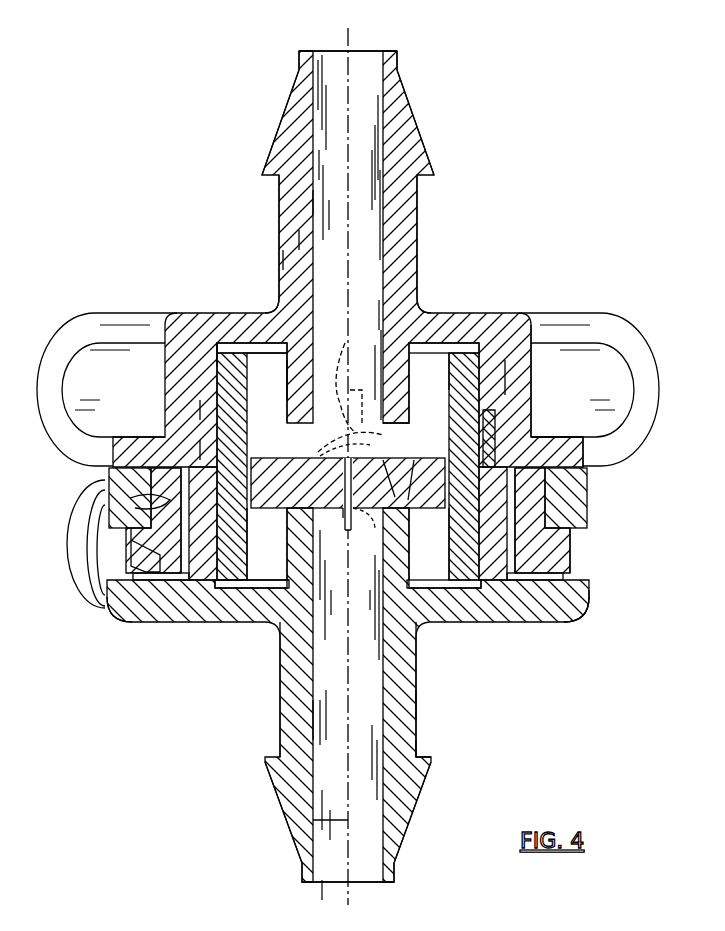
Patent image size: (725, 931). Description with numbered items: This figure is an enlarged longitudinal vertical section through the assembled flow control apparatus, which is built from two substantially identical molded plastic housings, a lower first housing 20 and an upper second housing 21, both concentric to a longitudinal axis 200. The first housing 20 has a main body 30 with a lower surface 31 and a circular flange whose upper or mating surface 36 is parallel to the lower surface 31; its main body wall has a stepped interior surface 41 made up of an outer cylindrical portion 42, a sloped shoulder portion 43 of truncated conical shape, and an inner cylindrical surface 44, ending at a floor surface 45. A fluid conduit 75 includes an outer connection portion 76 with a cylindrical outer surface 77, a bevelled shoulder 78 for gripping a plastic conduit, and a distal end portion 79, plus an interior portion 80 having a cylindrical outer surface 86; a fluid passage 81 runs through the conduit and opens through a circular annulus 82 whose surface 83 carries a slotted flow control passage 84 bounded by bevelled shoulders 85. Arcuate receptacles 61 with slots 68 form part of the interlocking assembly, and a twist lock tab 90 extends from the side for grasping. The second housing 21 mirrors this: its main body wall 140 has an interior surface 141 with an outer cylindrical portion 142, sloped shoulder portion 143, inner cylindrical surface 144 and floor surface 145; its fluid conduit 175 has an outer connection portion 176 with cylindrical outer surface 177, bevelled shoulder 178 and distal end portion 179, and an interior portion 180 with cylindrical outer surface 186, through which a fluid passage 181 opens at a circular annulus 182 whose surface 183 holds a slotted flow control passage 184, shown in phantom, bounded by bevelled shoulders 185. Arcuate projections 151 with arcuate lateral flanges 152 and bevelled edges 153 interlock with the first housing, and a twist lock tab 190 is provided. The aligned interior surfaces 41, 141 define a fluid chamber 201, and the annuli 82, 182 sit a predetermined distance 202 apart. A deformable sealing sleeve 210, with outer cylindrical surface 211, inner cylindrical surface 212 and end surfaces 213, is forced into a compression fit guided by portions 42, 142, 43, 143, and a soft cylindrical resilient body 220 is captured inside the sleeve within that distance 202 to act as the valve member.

The first housing 20 is at (228, 618).
The second housing 21 is at (447, 262).
The main body 30 is at (138, 624).
The lower surface 31 is at (492, 624).
The upper or mating surface 36 is at (523, 427).
The interior surface 41 is at (245, 516).
The outer cylindrical portion 42 is at (108, 479).
The sloped shoulder portion 43 is at (133, 560).
The inner cylindrical surface 44 is at (243, 563).
The floor surface 45 is at (452, 585).
The arcuate receptacles 61 is at (132, 500).
The slot 68 is at (112, 572).
The fluid conduit 75 is at (278, 690).
The outer connection portion 76 is at (420, 745).
The cylindrical outer surface 77 is at (420, 705).
The bevelled shoulder 78 is at (428, 782).
The distal end portion 79 is at (300, 870).
The interior portion 80 is at (411, 546).
The fluid passage 81 is at (330, 722).
The circular annulus 82 is at (414, 460).
The surface 83 is at (385, 460).
The slotted flow control passage 84 is at (344, 520).
The bevelled shoulders 85 is at (372, 525).
The cylindrical outer surface 86 is at (287, 527).
The twist lock tab 90 is at (90, 603).
The main body wall 140 is at (518, 385).
The interior surface 141 is at (470, 343).
The outer cylindrical portion 142 is at (513, 405).
The sloped shoulder portion 143 is at (513, 377).
The inner cylindrical surface 144 is at (456, 372).
The floor surface 145 is at (447, 322).
The arcuate projections 151 is at (110, 538).
The arcuate lateral flange 152 is at (560, 551).
The bevelled edge 153 is at (582, 594).
The fluid conduit 175 is at (298, 238).
The outer connection portion 176 is at (403, 208).
The cylindrical outer surface 177 is at (285, 260).
The bevelled shoulder 178 is at (268, 152).
The distal end portion 179 is at (300, 62).
The interior portion 180 is at (293, 377).
The fluid passage 181 is at (308, 214).
The circular annulus 182 is at (278, 437).
The surface 183 is at (345, 448).
The slotted flow control passage 184 is at (350, 378).
The bevelled shoulders 185 is at (333, 450).
The cylindrical outer surface 186 is at (417, 383).
The twist lock tab 190 is at (92, 314).
The longitudinal axis 200 is at (350, 820).
The fluid chamber 201 is at (212, 415).
The predetermined distance 202 is at (273, 443).
The sealing sleeve 210 is at (530, 618).
The outer cylindrical surface 211 is at (215, 367).
The inner cylindrical surface 212 is at (252, 466).
The end surfaces 213 is at (270, 330).
The resilient body 220 is at (348, 494).